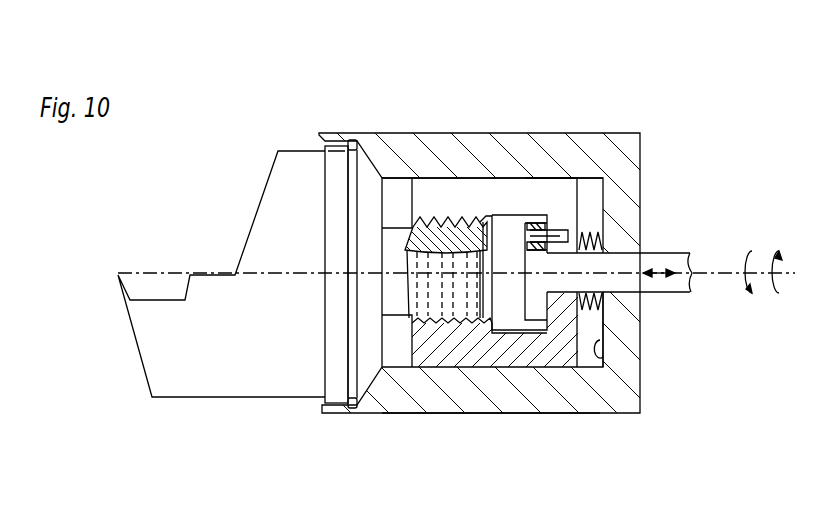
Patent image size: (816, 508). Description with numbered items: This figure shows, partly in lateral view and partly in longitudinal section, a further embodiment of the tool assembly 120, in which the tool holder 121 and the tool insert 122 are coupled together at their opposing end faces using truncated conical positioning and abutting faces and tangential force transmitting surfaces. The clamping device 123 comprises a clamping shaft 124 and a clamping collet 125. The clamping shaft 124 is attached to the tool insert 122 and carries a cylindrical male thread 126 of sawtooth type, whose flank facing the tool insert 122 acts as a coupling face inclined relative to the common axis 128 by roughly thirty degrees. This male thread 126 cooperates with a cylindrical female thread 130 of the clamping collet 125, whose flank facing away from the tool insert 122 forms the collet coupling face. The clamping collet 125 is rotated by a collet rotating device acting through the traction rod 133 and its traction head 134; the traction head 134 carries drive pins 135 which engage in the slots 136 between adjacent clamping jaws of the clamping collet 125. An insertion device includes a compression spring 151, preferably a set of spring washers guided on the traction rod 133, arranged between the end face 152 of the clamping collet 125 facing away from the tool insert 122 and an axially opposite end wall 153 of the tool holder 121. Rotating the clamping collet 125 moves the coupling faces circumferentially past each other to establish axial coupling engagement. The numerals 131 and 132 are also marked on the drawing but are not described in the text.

The tool assembly 120 is at (228, 110).
The tool holder 121 is at (630, 79).
The tool insert 122 is at (155, 224).
The clamping device 123 is at (411, 441).
The clamping shaft 124 is at (391, 205).
The clamping collet 125 is at (399, 364).
The cylindrical male thread 126 is at (445, 187).
The common axis 128 is at (283, 275).
The cylindrical female thread 130 is at (466, 314).
The housing bore 131 is at (505, 160).
The chamber 132 is at (538, 188).
The traction rod 133 is at (660, 263).
The traction head 134 is at (537, 307).
The drive pins 135 is at (573, 231).
The slots 136 is at (445, 223).
The compression spring 151 is at (603, 313).
The end face 152 is at (592, 191).
The end wall 153 is at (603, 360).